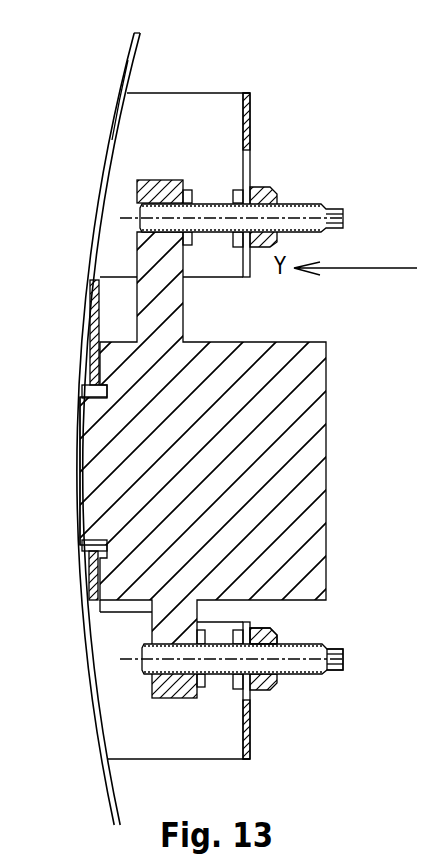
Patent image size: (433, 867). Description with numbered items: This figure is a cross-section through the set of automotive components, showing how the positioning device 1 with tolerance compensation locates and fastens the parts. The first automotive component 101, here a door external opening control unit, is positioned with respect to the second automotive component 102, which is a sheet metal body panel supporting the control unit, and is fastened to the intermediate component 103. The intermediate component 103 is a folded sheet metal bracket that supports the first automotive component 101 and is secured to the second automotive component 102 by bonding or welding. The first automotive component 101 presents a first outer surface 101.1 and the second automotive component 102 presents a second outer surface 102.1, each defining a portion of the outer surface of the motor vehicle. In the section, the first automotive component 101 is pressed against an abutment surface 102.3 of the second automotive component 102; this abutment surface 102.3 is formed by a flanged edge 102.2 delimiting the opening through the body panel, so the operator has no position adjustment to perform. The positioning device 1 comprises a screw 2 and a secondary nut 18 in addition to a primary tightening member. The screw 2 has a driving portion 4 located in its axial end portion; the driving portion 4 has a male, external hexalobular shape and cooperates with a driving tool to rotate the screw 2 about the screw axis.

The positioning device with tolerance compensation 1 is at (292, 195).
The screw 2 is at (310, 653).
The driving portion 4 is at (337, 664).
The secondary nut 18 is at (272, 640).
The first automotive component 101 is at (290, 367).
The first outer surface 101.1 is at (78, 518).
The second automotive component 102 is at (105, 777).
The second outer surface 102.1 is at (121, 79).
The flanged edge 102.2 is at (82, 393).
The abutment surface 102.3 is at (118, 387).
The intermediate component 103 is at (250, 148).